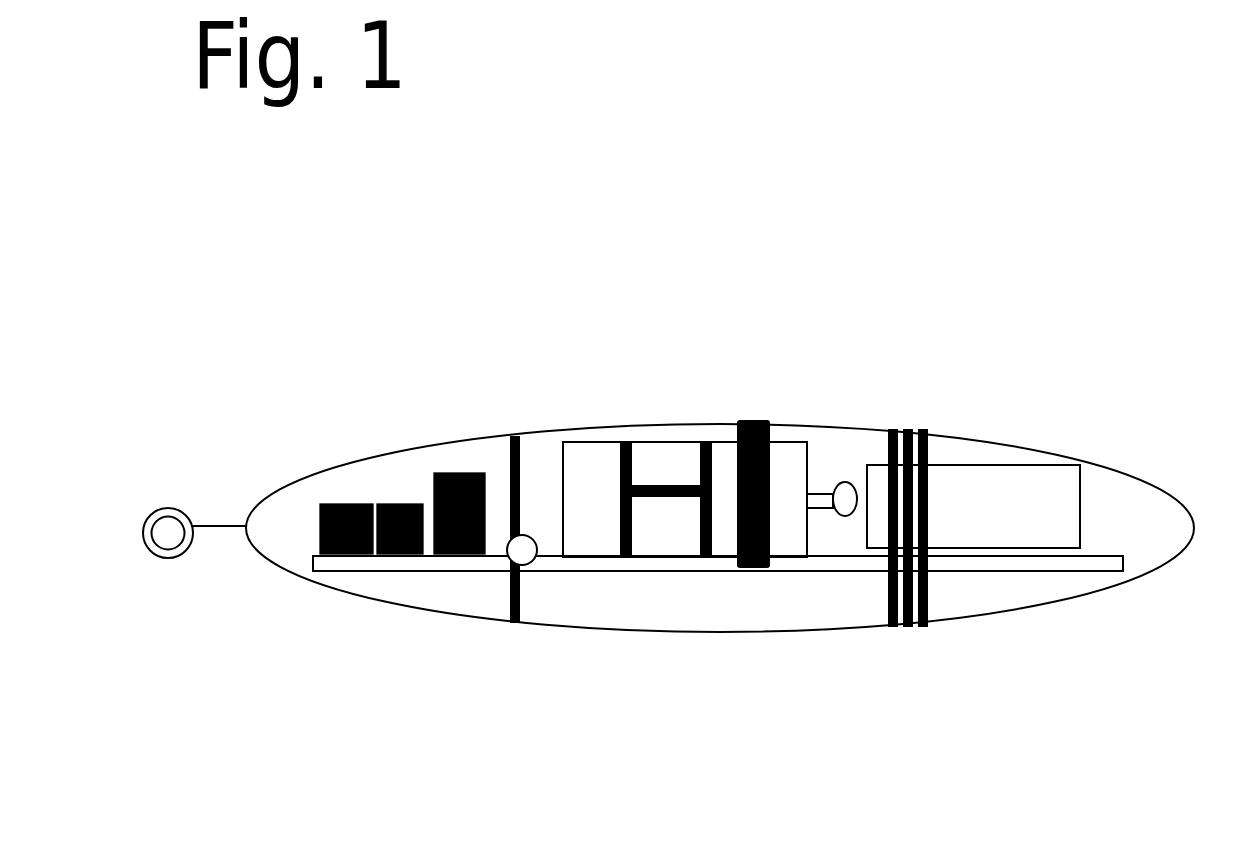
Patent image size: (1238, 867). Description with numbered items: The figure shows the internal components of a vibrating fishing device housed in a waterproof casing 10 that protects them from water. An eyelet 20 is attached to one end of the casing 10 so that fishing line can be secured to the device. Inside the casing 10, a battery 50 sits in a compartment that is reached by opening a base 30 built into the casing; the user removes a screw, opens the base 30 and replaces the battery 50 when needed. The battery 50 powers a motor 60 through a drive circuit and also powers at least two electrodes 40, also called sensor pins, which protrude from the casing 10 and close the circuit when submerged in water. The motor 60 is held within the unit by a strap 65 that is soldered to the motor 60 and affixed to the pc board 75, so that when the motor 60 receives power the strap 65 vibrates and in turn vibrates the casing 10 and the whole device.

The casing 10 is at (1172, 560).
The eyelet 20 is at (163, 507).
The base 30 is at (917, 627).
The electrodes 40 is at (527, 560).
The battery 50 is at (992, 470).
The motor 60 is at (625, 442).
The strap 65 is at (763, 420).
The pc board 75 is at (835, 567).